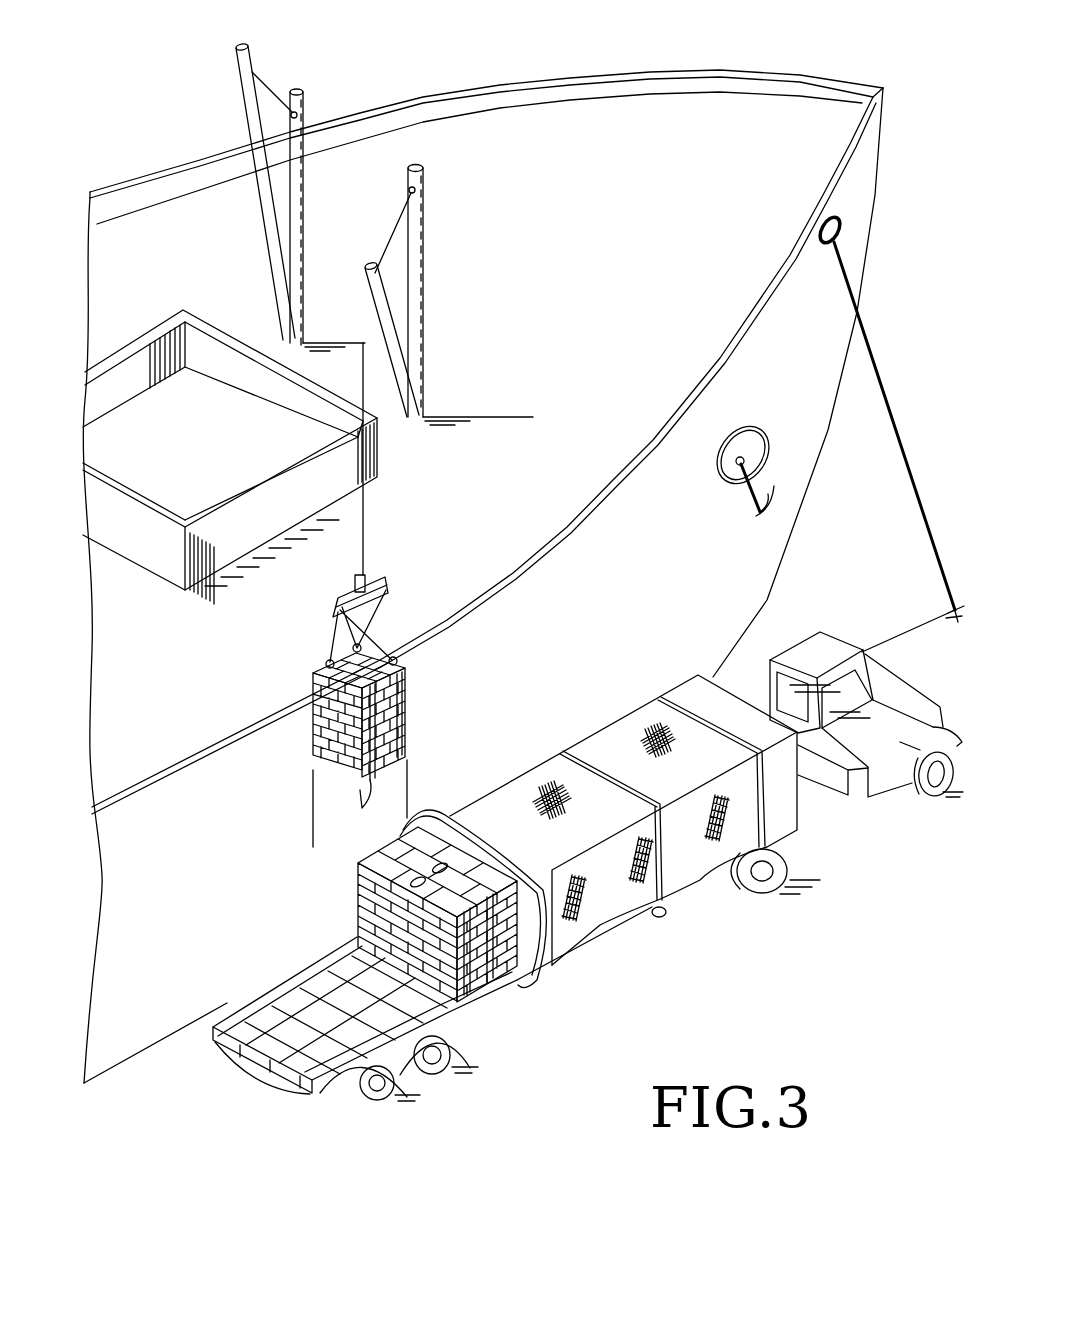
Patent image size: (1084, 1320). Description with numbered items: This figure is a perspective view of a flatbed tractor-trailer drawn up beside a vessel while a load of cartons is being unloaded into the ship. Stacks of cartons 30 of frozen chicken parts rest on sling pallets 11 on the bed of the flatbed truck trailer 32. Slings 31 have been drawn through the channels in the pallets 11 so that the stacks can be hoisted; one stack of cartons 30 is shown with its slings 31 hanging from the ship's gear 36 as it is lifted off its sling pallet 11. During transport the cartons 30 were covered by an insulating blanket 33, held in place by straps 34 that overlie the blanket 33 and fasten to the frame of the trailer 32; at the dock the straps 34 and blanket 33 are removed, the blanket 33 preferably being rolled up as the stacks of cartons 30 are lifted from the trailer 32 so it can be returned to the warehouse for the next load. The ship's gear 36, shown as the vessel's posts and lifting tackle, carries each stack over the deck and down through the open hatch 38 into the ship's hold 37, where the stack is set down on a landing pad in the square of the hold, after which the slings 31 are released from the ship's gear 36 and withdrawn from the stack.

The sling pallet 11 is at (227, 1017).
The stack of cartons 30 is at (297, 741).
The sling 31 is at (410, 752).
The flatbed truck trailer 32 is at (666, 938).
The insulating blanket 33 is at (585, 782).
The strap 34 is at (661, 698).
The ship's gear 36 is at (314, 181).
The ship's hold 37 is at (164, 400).
The open hatch 38 is at (220, 347).